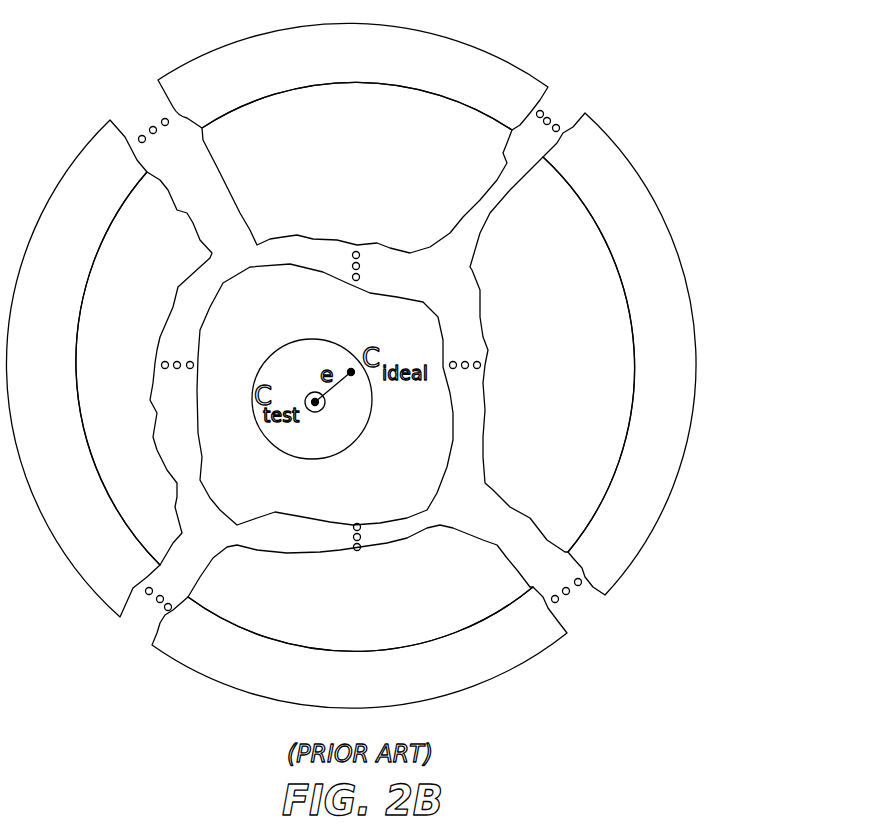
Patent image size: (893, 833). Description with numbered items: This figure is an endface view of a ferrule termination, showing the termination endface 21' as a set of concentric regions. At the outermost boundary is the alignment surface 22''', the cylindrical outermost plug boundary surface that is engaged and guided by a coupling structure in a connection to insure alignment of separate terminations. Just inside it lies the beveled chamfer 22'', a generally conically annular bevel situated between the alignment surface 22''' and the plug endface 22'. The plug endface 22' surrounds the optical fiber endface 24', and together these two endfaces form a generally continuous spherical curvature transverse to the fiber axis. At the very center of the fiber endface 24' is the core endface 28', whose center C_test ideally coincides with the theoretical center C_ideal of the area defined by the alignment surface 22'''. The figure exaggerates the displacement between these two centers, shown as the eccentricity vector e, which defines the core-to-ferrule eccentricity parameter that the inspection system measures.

The termination endface 21' is at (370, 357).
The plug endface 22' is at (355, 366).
The beveled chamfer 22'' is at (619, 354).
The alignment surface 22''' is at (703, 287).
The optical fiber endface 24' is at (327, 411).
The core endface 28' is at (297, 443).